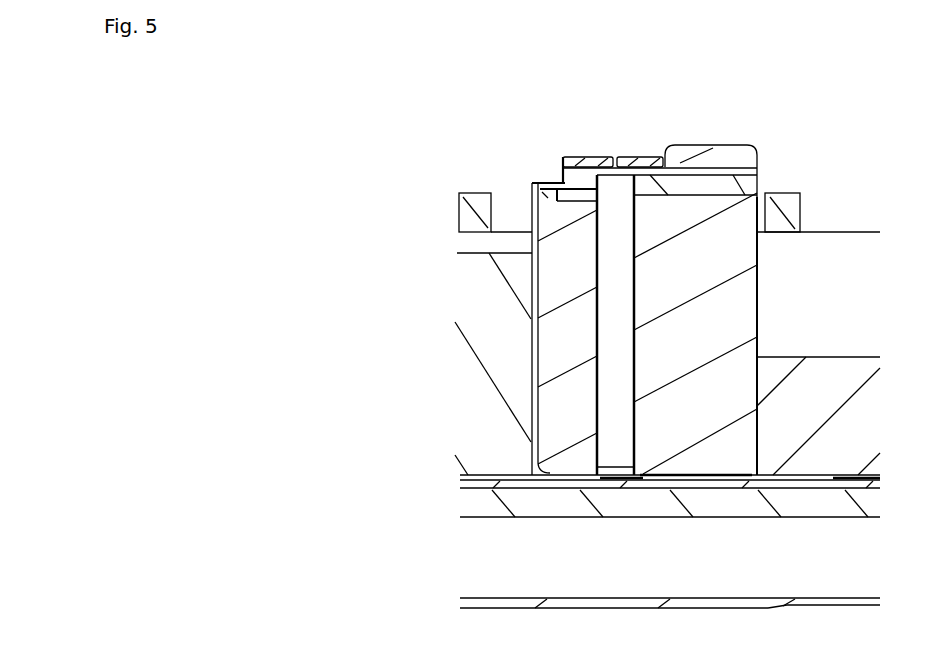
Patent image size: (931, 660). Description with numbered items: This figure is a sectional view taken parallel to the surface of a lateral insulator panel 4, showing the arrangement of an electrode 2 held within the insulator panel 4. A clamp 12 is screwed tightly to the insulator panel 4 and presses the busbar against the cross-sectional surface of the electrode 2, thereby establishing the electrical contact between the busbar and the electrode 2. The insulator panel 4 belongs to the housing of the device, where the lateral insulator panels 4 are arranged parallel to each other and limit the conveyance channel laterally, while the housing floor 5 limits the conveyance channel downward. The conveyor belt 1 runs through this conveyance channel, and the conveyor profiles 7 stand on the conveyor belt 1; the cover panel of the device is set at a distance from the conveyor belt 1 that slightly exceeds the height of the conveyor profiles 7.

The clamp 12 is at (555, 144).
The electrode 2 is at (600, 288).
The lateral insulator panel 4 is at (535, 342).
The conveyor profile 7 is at (520, 387).
The conveyor belt 1 is at (474, 484).
The housing floor 5 is at (534, 509).